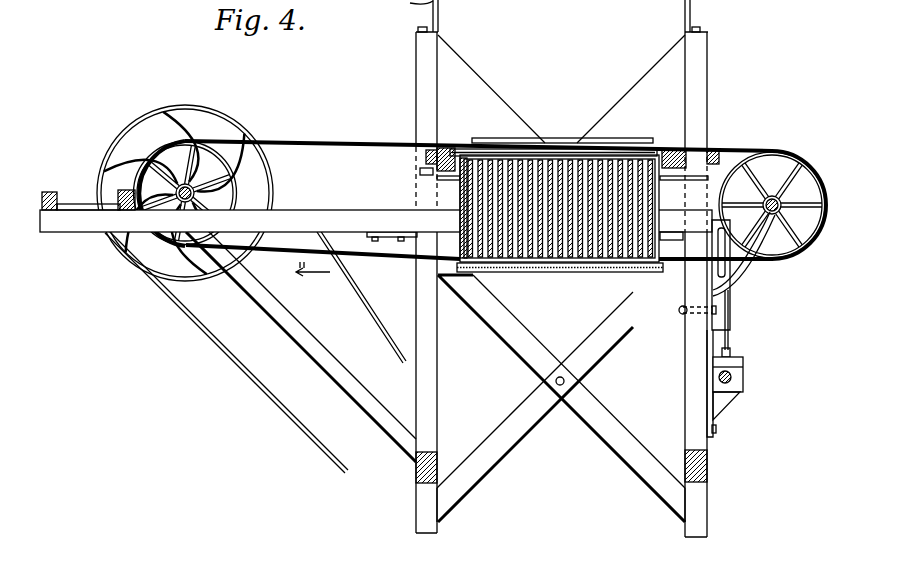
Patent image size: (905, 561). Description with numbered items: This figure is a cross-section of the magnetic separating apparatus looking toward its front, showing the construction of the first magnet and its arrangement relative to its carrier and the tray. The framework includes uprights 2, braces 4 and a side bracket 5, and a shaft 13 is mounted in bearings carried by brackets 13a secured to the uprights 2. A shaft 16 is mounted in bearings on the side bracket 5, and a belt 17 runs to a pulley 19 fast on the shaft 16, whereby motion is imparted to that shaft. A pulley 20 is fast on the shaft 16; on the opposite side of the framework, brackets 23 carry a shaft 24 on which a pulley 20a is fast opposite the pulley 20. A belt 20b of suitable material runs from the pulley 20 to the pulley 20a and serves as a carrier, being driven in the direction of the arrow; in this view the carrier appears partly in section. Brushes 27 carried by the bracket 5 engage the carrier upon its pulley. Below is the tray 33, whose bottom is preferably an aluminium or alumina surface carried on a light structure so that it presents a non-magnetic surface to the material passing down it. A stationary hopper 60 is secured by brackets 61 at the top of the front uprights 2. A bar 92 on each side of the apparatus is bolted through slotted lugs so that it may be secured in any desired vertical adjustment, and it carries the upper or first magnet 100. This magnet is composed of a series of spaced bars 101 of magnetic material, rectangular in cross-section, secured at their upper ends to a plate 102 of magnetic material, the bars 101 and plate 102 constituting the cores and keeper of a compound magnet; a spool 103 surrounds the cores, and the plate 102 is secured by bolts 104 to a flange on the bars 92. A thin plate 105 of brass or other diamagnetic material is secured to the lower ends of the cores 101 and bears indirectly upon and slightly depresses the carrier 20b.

The uprights 2 is at (700, 507).
The braces 4 is at (530, 423).
The side bracket 5 is at (67, 224).
The shaft 13 is at (733, 377).
The brackets 13a is at (740, 397).
The shaft 16 is at (122, 245).
The belt 17 is at (253, 389).
The pulley 19 is at (140, 125).
The pulley 20 is at (163, 157).
The pulley 20a is at (793, 163).
The belt (carrier) 20b is at (293, 140).
The brackets 23 is at (747, 272).
The shaft 24 is at (781, 200).
The brushes 27 is at (82, 205).
The tray 33 is at (587, 273).
The stationary hopper 60 is at (638, 5).
The brackets 61 is at (688, 19).
The bar 92 is at (433, 150).
The upper or first magnet 100 is at (660, 103).
The bars (cores) 101 is at (522, 158).
The plate (keeper) 102 is at (558, 157).
The spool 103 is at (460, 190).
The bolts 104 is at (453, 148).
The thin plate 105 is at (500, 266).